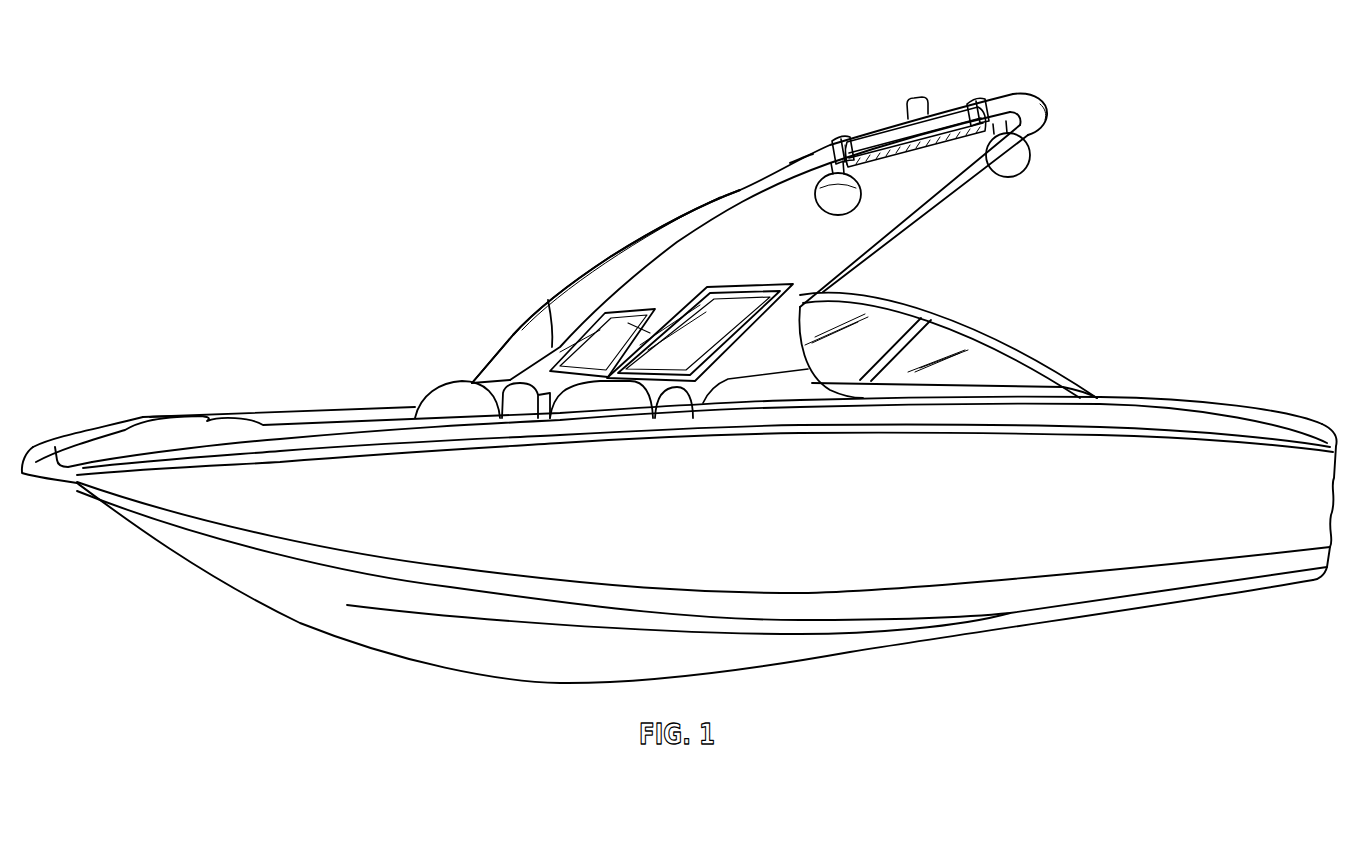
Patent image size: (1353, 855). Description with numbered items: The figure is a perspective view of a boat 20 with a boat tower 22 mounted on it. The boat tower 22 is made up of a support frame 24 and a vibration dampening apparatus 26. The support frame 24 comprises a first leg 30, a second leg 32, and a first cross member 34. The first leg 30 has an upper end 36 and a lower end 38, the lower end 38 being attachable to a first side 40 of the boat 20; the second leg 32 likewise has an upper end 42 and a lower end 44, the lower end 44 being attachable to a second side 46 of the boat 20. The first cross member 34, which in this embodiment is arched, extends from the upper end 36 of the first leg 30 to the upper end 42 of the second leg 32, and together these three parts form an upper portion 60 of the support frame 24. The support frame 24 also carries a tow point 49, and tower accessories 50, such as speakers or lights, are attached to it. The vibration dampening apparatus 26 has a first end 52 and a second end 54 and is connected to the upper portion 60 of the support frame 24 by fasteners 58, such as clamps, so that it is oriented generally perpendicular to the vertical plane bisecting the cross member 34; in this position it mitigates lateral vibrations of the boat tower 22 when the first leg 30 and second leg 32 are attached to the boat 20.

The boat 20 is at (156, 531).
The boat tower 22 is at (733, 197).
The support frame 24 is at (860, 152).
The vibration dampening apparatus 26 is at (913, 157).
The first leg 30 is at (503, 345).
The second leg 32 is at (858, 253).
The first cross member 34 is at (993, 92).
The upper end 36 is at (677, 217).
The lower end 38 is at (468, 379).
The first side 40 is at (312, 418).
The upper end 42 is at (1033, 125).
The lower end 44 is at (735, 375).
The second side 46 is at (697, 403).
The tow point 49 is at (918, 98).
The tower accessory 50 is at (817, 187).
The first end 52 is at (993, 137).
The second end 54 is at (863, 173).
The fastener 58 is at (855, 142).
The upper portion 60 is at (813, 154).